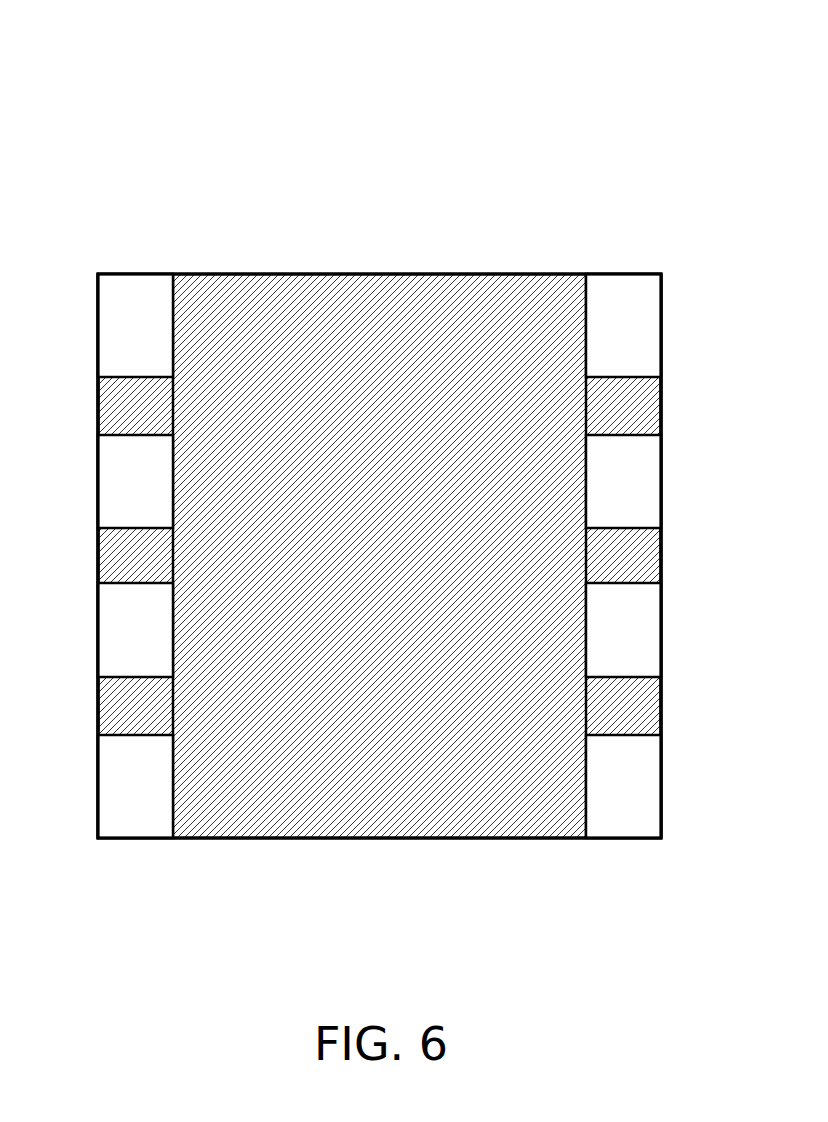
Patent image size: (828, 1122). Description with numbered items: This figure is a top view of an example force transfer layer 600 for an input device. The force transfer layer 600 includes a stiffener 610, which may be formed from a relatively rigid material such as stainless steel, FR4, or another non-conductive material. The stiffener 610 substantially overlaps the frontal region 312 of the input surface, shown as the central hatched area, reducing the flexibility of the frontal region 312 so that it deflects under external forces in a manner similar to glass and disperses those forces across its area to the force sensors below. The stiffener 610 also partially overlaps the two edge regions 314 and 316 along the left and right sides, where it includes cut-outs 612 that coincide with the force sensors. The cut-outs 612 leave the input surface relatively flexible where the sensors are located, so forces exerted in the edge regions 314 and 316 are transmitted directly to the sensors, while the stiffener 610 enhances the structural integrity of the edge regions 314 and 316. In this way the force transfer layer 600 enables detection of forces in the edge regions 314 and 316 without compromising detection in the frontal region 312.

The force transfer layer 600 is at (189, 58).
The stiffener 610 is at (343, 838).
The frontal region 312 is at (173, 257).
The edge region 314 is at (135, 252).
The edge region 316 is at (623, 252).
The cut-outs 612 is at (132, 481).